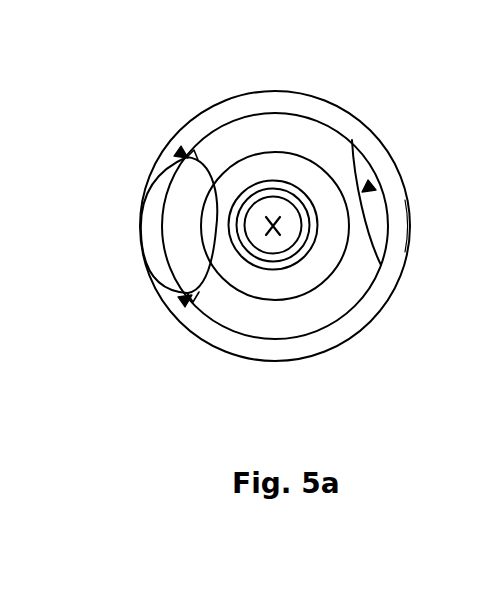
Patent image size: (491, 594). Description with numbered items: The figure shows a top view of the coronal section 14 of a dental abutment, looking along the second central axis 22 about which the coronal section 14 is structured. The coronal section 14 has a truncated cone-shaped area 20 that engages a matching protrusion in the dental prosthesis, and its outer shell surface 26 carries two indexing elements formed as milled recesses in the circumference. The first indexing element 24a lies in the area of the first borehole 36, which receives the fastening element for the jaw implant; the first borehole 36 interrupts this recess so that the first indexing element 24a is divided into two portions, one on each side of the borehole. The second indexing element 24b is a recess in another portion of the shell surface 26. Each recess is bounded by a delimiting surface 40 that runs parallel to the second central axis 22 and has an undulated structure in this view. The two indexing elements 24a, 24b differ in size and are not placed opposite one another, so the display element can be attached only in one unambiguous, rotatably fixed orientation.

The coronal section 14 is at (266, 58).
The truncated cone-shaped area 20 is at (308, 143).
The second central axis 22 is at (282, 244).
The first indexing element 24a is at (181, 148).
The second indexing element 24b is at (367, 182).
The shell surface 26 is at (348, 304).
The first borehole 36 is at (158, 233).
The delimiting surface 40 is at (362, 192).